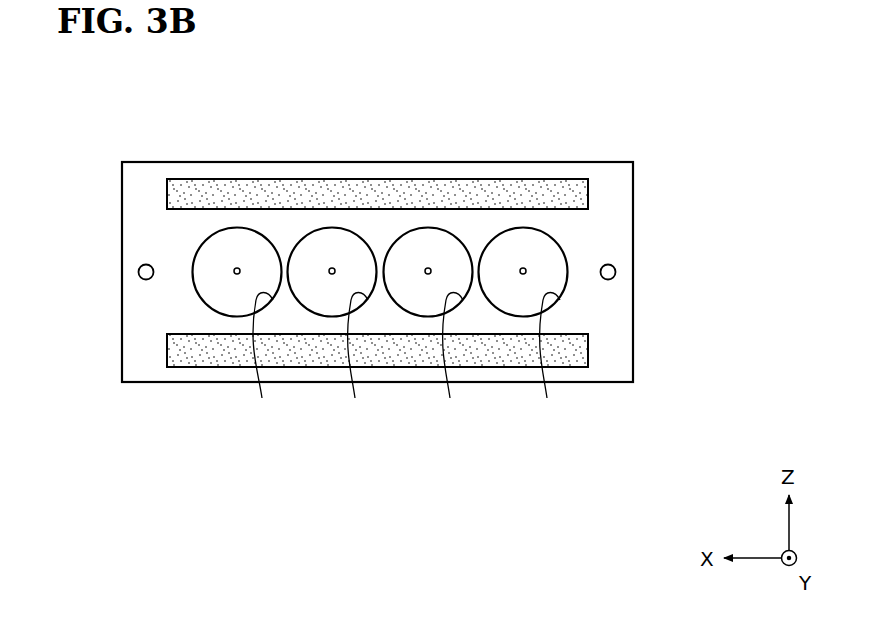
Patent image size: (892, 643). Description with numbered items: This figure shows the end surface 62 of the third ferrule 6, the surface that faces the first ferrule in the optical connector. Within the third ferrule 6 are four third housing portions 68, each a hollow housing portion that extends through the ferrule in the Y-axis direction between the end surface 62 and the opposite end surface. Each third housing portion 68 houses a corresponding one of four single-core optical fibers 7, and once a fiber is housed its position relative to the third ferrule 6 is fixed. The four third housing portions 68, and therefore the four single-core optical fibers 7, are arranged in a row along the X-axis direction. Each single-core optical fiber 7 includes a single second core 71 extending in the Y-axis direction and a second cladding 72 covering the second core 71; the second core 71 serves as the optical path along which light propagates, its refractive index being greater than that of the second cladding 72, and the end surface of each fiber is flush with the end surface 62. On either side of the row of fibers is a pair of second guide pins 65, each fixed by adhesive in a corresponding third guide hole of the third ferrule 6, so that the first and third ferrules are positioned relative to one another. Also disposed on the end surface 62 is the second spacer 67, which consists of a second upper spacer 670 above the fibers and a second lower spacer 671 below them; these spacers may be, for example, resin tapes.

The third ferrule 6 is at (594, 156).
The end surface 62 is at (634, 197).
The second guide pins 65 is at (138, 272).
The second spacer 67 is at (300, 186).
The second upper spacer 670 is at (486, 178).
The second lower spacer 671 is at (493, 368).
The single-core optical fibers 7 is at (317, 278).
The third housing portions 68 is at (402, 359).
The second core 71 is at (237, 277).
The second cladding 72 is at (174, 326).